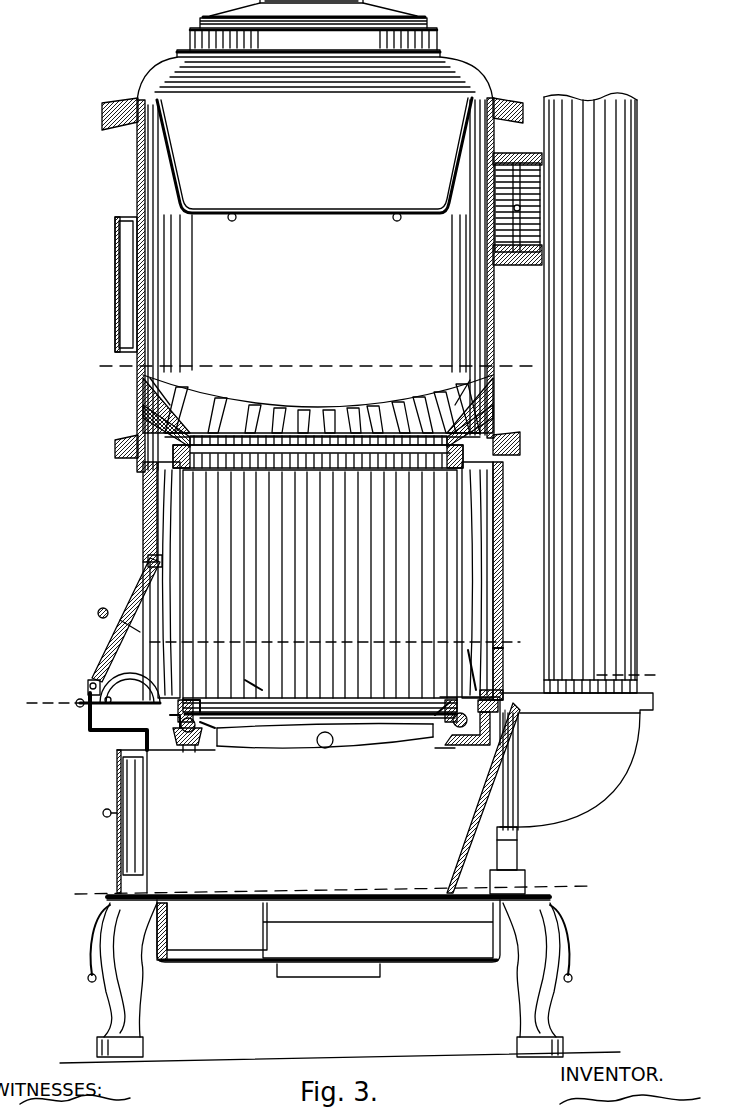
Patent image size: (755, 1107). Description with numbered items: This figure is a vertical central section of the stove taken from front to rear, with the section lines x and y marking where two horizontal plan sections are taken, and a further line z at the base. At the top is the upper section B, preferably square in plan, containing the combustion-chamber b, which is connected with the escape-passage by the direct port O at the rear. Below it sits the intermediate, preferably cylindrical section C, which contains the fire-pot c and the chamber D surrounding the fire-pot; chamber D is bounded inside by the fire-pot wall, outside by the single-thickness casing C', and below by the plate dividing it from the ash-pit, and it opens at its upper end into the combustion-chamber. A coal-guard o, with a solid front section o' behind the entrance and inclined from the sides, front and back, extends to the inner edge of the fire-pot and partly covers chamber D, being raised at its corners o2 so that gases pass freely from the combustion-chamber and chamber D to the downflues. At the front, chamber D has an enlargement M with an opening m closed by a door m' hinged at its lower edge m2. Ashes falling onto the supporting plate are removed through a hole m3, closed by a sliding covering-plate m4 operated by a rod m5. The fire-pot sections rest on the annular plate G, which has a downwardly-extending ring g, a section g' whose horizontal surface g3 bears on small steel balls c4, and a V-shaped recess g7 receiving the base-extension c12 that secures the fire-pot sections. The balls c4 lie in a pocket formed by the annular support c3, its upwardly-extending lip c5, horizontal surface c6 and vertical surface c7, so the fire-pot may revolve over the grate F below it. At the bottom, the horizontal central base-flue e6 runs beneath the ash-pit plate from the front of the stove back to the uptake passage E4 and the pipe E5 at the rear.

The upper section B is at (135, 200).
The combustion-chamber b is at (314, 207).
The direct port O is at (502, 212).
The coal-guard o is at (318, 410).
The solid front section of coal-guard o' is at (318, 426).
The raised corners of coal-guard o2 is at (162, 382).
The chamber surrounding fire-pot D is at (480, 512).
The intermediate section C is at (142, 581).
The fire-pot c is at (320, 592).
The casing of intermediate section C' is at (498, 581).
The section line x x is at (313, 367).
The section line y y is at (341, 676).
The section line z is at (330, 889).
The enlargement of chamber D M is at (122, 655).
The opening m is at (131, 630).
The door m' is at (104, 604).
The lower hinge edge of door m2 is at (88, 685).
The rod m5 is at (78, 704).
The sliding covering-plate m4 is at (134, 690).
The hole m3 is at (115, 735).
The grate F is at (325, 739).
The annular fire-pot-supporting plate G is at (312, 718).
The downwardly-extending ring g is at (185, 693).
The base-extension of fire-pot c12 is at (210, 698).
The recess g7 is at (252, 677).
The annular support c3 is at (196, 735).
The steel balls c4 is at (180, 745).
The upwardly-extending lip c5 is at (210, 740).
The horizontal surface c6 is at (188, 752).
The vertical surface c7 is at (174, 724).
The section of plate G g' is at (432, 739).
The horizontal surface of section g' g3 is at (505, 690).
The uptake passage E4 is at (571, 793).
The pipe E5 is at (640, 562).
The horizontal central base-flue e6 is at (328, 938).